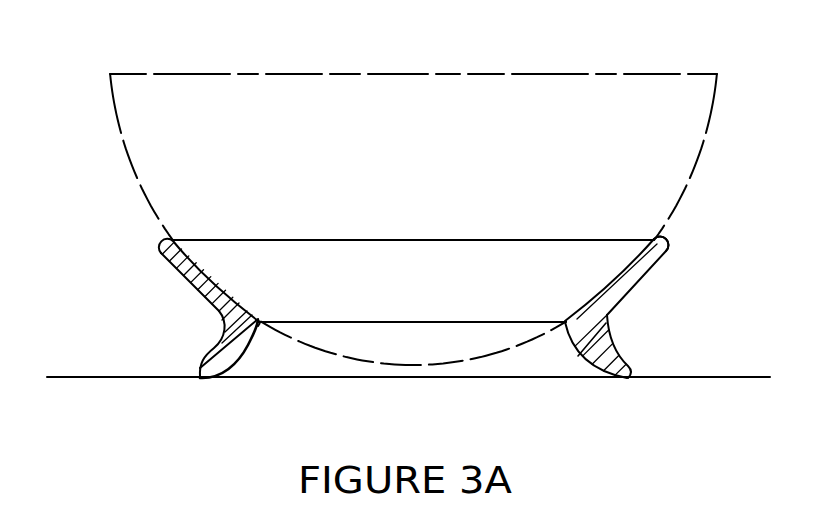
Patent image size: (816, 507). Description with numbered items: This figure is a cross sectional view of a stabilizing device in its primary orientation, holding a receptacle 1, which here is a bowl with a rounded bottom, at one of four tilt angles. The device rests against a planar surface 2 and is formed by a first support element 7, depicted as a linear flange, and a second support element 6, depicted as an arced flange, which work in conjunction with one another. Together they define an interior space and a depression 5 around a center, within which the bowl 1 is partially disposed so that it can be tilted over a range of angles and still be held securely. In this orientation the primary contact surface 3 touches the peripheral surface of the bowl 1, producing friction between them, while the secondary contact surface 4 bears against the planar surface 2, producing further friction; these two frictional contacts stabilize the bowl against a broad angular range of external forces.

The receptacle 1 is at (340, 73).
The planar surface 2 is at (158, 377).
The primary contact surface 3 is at (216, 280).
The secondary contact surface 4 is at (247, 350).
The depression 5 is at (465, 240).
The second support element 6 is at (630, 368).
The first support element 7 is at (668, 243).